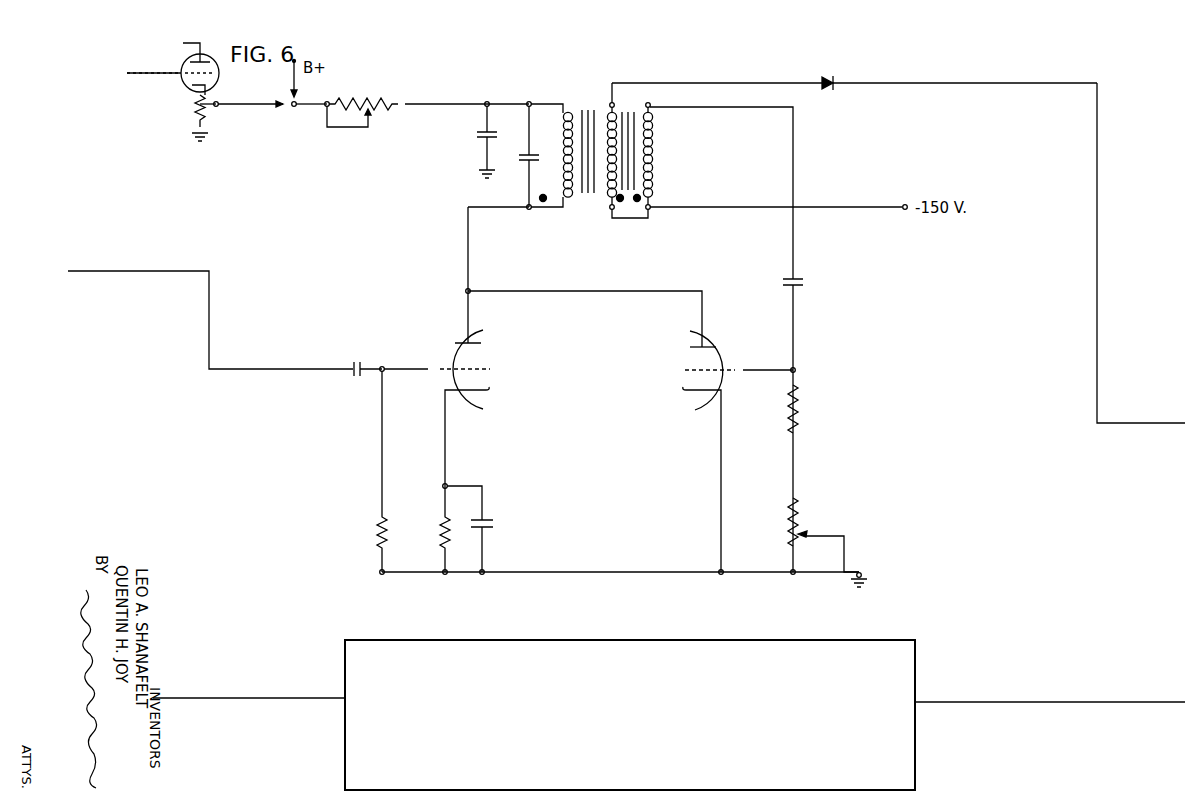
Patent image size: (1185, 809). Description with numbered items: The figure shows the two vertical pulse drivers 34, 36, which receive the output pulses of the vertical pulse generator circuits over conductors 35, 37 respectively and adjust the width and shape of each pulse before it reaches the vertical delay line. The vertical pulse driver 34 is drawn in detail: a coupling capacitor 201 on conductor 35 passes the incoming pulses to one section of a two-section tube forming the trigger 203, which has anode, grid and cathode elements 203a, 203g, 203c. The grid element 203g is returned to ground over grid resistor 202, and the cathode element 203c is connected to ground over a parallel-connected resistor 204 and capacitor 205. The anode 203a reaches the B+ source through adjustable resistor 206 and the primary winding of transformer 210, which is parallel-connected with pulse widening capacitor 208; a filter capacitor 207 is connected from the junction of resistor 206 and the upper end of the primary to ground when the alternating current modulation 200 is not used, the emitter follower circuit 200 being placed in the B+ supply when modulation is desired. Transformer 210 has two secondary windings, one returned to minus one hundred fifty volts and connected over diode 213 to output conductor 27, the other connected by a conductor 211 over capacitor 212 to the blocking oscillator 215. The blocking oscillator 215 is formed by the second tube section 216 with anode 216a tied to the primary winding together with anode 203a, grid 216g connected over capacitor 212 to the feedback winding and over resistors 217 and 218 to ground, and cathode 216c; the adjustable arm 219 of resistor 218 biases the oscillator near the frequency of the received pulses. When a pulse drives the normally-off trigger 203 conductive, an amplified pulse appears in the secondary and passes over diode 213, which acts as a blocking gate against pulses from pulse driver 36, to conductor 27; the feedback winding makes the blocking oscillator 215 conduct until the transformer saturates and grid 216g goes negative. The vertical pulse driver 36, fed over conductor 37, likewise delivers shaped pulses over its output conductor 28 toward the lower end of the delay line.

The emitter follower circuit 200 is at (194, 87).
The coupling capacitor 201 is at (366, 345).
The grid resistor 202 is at (376, 526).
The trigger 203 is at (463, 388).
The anode element 203a is at (478, 347).
The grid element 203g is at (490, 368).
The cathode element 203c is at (493, 387).
The cathode resistor 204 is at (445, 526).
The cathode capacitor 205 is at (494, 531).
The adjustable resistor 206 is at (361, 125).
The filter capacitor 207 is at (472, 136).
The pulse widening capacitor 208 is at (518, 158).
The transformer 210 is at (624, 256).
The conductor 211 is at (797, 229).
The capacitor 212 is at (803, 283).
The diode 213 is at (831, 76).
The blocking oscillator 215 is at (893, 355).
The second section of vacuum tube 216 is at (711, 440).
The anode 216a is at (689, 347).
The grid 216g is at (684, 370).
The cathode 216c is at (674, 477).
The resistor 217 is at (800, 403).
The resistor 218 is at (797, 513).
The adjustable arm 219 is at (835, 518).
The output conductor 27 is at (1166, 422).
The output lead 28 is at (1169, 705).
The vertical pulse driver 34 is at (517, 277).
The conductor 35 is at (211, 331).
The vertical pulse driver 36 is at (630, 715).
The conductor 37 is at (236, 696).